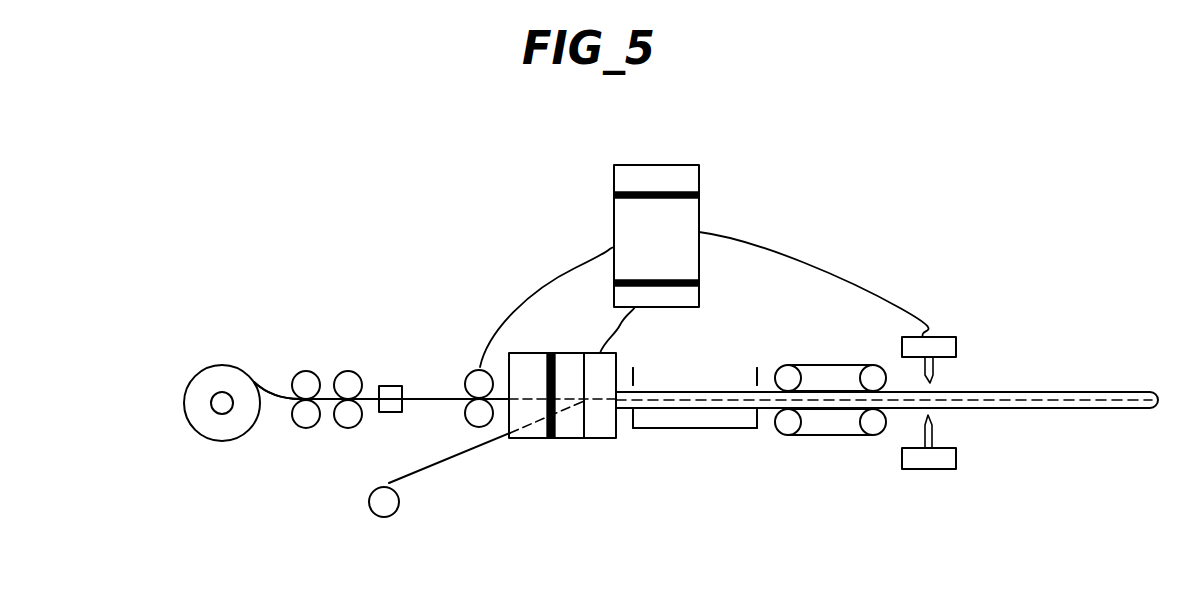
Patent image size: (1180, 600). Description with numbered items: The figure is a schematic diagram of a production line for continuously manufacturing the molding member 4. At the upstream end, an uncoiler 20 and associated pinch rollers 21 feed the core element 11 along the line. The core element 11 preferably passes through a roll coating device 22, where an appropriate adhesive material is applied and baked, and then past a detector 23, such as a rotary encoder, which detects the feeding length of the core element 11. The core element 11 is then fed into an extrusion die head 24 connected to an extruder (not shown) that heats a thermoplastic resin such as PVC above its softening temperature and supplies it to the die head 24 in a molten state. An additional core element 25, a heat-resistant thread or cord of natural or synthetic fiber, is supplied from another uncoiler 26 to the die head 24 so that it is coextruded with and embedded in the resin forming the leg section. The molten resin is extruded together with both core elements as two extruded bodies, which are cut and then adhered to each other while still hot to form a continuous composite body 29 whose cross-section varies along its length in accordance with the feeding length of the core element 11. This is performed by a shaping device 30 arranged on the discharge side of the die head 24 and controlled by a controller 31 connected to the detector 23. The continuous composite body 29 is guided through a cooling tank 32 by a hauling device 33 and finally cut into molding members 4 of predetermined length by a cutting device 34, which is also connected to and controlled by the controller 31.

The molding member 4 is at (1085, 390).
The core element 11 is at (272, 396).
The uncoiler 20 is at (225, 441).
The pinch rollers 21 is at (350, 370).
The roll coating device 22 is at (390, 386).
The detector 23 is at (475, 368).
The extrusion die head 24 is at (532, 438).
The additional core element 25 is at (438, 463).
The uncoiler 26 is at (370, 517).
The continuous composite body 29 is at (720, 390).
The shaping device 30 is at (607, 438).
The controller 31 is at (661, 165).
The cooling tank 32 is at (740, 428).
The hauling device 33 is at (847, 435).
The cutting device 34 is at (937, 469).